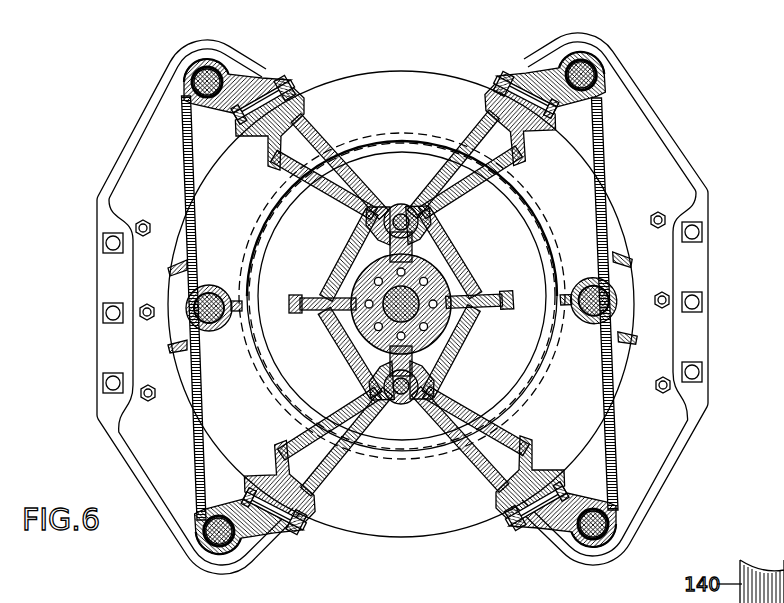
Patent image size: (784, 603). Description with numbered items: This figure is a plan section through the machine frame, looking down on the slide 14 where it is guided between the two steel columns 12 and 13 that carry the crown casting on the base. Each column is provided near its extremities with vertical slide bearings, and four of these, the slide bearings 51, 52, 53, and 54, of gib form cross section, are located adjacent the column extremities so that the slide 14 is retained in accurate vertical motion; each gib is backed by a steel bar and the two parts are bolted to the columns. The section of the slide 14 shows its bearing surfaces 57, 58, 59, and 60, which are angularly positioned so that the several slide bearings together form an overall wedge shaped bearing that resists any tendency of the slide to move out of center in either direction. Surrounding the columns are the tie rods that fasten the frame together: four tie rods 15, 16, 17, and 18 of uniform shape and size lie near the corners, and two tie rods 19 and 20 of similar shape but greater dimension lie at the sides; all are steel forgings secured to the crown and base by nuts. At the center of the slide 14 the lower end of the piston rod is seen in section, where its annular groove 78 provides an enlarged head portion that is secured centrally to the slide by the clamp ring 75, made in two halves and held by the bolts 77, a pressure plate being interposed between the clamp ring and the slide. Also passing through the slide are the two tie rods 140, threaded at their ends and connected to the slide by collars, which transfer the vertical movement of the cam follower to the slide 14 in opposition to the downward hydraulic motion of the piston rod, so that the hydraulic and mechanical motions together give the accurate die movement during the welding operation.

The steel column 12 is at (196, 447).
The steel column 13 is at (620, 440).
The slide 14 is at (466, 357).
The tie rod 15 is at (214, 548).
The tie rod 16 is at (198, 81).
The tie rod 17 is at (592, 73).
The tie rod 18 is at (600, 538).
The tie rod 19 is at (209, 292).
The tie rod 20 is at (593, 285).
The slide bearing 51 is at (296, 522).
The slide bearing 52 is at (289, 100).
The slide bearing 53 is at (512, 95).
The slide bearing 54 is at (538, 528).
The bearing surface 57 is at (333, 520).
The bearing surface 58 is at (292, 104).
The bearing surface 59 is at (507, 100).
The bearing surface 60 is at (507, 500).
The clamp ring 75 is at (438, 296).
The bolts 77 is at (415, 348).
The annular groove 78 is at (413, 285).
The tie rod 140 is at (401, 214).